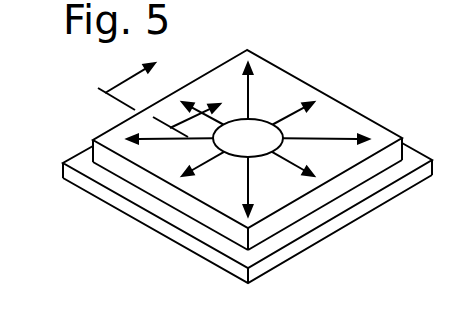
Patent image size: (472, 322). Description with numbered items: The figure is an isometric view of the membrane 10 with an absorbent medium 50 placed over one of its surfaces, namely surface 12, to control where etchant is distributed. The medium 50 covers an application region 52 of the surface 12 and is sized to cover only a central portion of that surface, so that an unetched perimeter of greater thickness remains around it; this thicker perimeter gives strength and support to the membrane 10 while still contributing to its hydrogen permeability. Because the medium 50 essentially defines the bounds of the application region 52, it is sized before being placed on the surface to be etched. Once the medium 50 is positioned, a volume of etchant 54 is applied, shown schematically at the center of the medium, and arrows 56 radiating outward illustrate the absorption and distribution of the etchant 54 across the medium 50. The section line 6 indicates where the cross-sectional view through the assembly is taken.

The section line 6- 6 is at (169, 88).
The membrane 10 is at (329, 67).
The surface 12 is at (420, 156).
The absorbent medium 50 is at (285, 102).
The application region 52 is at (322, 200).
The etchant 54 is at (236, 148).
The arrows 56 is at (296, 110).